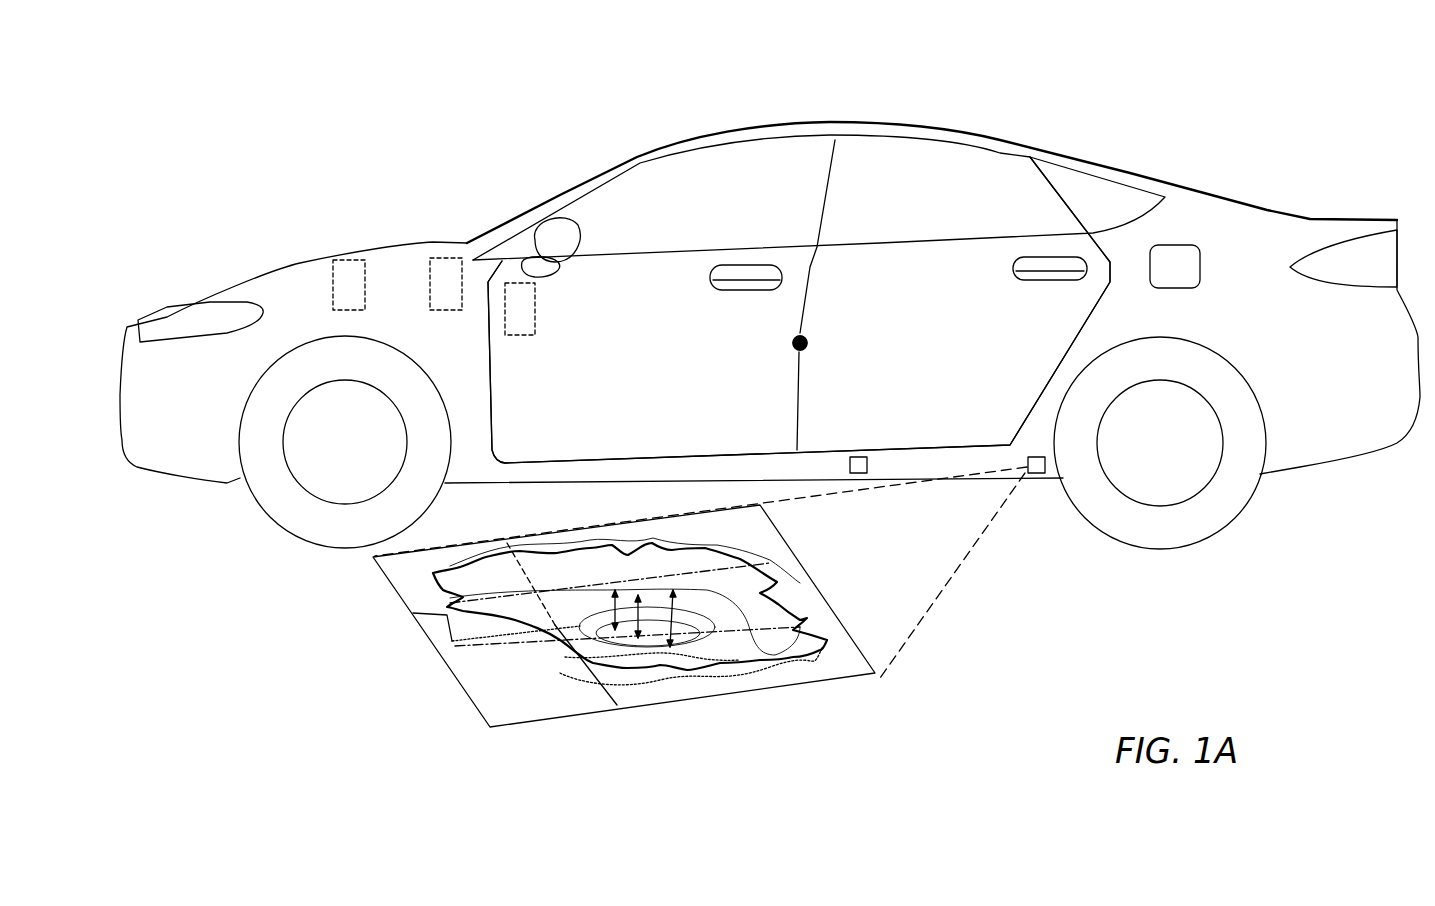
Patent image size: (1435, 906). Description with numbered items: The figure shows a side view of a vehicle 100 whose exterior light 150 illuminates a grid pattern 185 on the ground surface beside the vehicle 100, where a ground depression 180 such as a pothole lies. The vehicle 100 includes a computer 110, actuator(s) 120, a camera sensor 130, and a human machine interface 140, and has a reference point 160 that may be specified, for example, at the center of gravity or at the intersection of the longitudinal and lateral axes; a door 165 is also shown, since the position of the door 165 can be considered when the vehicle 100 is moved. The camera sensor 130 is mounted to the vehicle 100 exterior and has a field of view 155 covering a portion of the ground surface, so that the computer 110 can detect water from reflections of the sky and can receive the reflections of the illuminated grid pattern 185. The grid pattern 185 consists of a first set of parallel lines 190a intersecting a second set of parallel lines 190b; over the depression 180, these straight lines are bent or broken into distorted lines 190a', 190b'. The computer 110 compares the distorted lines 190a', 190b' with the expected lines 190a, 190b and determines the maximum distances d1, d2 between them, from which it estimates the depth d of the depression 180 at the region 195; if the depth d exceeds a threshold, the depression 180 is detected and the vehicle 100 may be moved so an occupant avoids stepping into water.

The vehicle 100 is at (902, 125).
The computer 110 is at (442, 257).
The actuator 120 is at (338, 258).
The camera sensor 130 is at (1034, 457).
The human machine interface 140 is at (520, 283).
The exterior light 150 is at (857, 457).
The field of view 155 is at (935, 612).
The reference point 160 is at (806, 340).
The door 165 is at (677, 282).
The ground depression 180 is at (423, 577).
The grid pattern 185 is at (770, 690).
The first set of parallel lines 190a is at (581, 673).
The second set of parallel lines 190b is at (577, 554).
The distorted line 190a' is at (648, 583).
The distorted line 190b' is at (625, 668).
The puddle 195 is at (720, 687).
The depth d is at (665, 610).
The maximum distance d1 is at (642, 608).
The maximum distance d2 is at (690, 612).